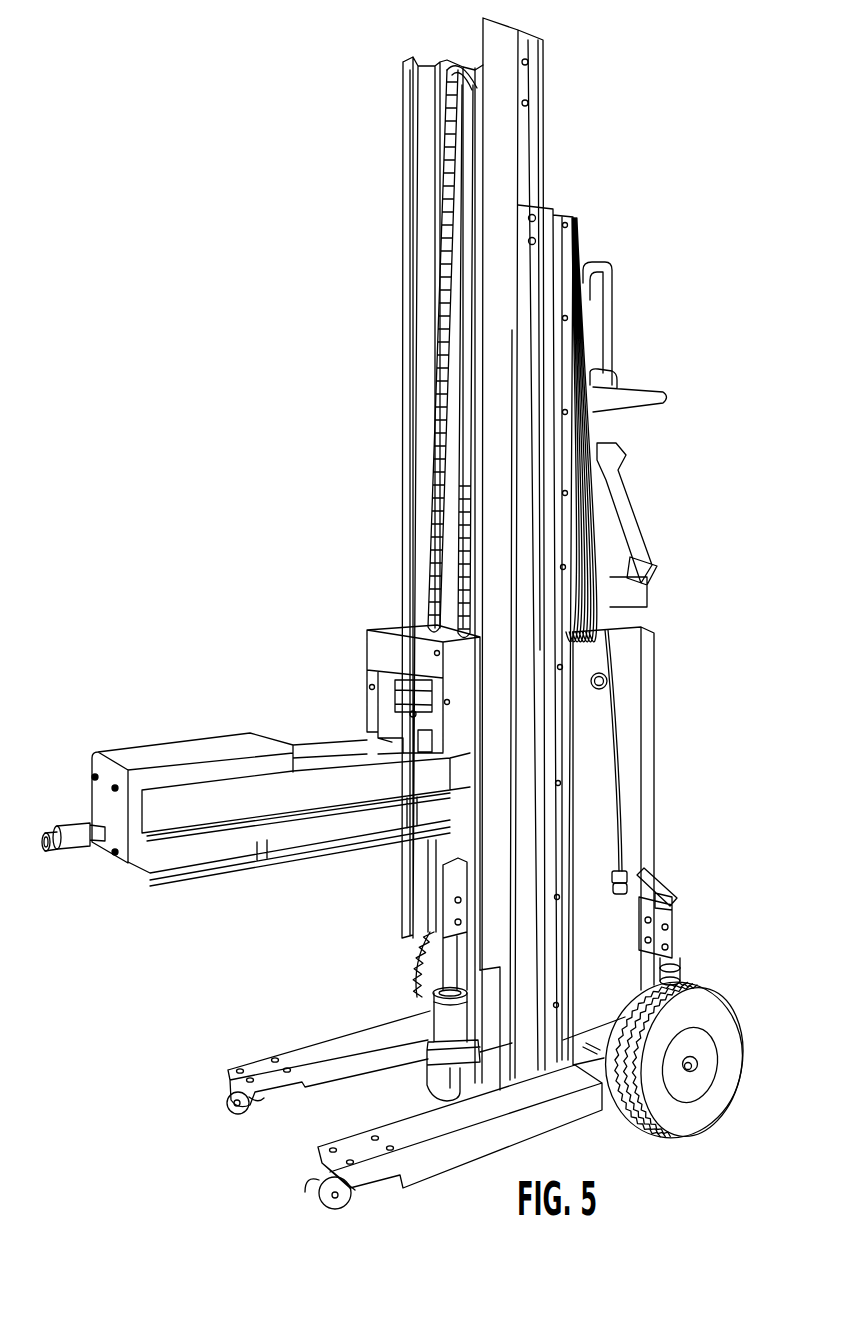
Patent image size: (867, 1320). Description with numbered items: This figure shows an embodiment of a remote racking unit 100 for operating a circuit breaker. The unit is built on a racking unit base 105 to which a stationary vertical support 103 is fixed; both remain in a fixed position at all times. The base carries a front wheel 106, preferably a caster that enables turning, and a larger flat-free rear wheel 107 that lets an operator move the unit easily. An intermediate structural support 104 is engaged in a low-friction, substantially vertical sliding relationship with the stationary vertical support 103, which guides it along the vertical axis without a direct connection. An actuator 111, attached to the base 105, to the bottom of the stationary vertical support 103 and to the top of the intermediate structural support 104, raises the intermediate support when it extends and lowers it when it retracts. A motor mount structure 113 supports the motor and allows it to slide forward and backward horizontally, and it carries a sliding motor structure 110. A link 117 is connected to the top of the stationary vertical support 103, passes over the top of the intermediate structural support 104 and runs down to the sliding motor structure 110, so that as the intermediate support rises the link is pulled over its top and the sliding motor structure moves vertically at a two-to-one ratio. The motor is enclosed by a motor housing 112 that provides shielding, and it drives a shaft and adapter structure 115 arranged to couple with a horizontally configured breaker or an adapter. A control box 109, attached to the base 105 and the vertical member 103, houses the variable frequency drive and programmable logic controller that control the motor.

The remote racking unit 100 is at (244, 378).
The stationary vertical support 103 is at (547, 240).
The intermediate structural support 104 is at (502, 153).
The racking unit base 105 is at (328, 1043).
The front wheel 106 is at (322, 1193).
The rear wheel 107 is at (724, 1018).
The control box 109 is at (637, 795).
The sliding motor structure 110 is at (383, 648).
The actuator 111 is at (442, 1018).
The motor housing 112 is at (150, 755).
The motor mount structure 113 is at (345, 787).
The shaft and adapter structure 115 is at (78, 822).
The link 117 is at (463, 570).